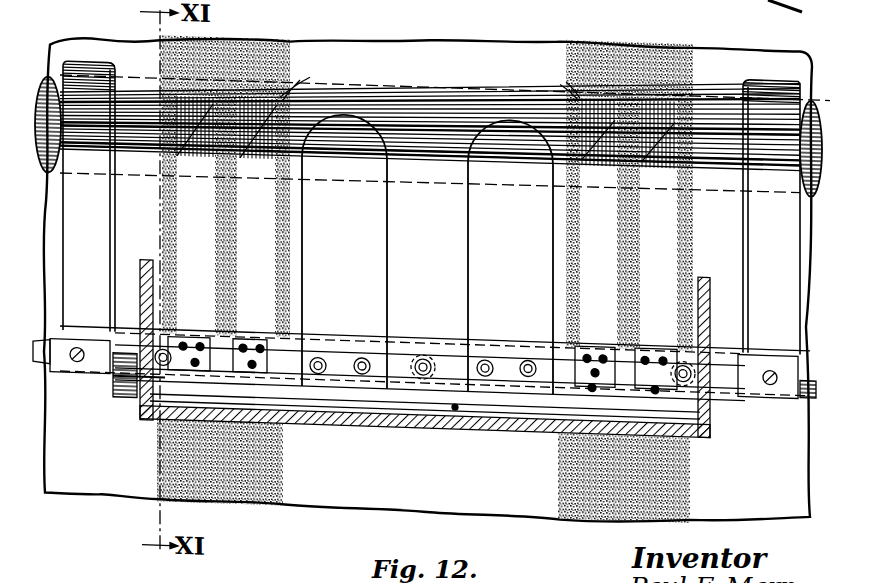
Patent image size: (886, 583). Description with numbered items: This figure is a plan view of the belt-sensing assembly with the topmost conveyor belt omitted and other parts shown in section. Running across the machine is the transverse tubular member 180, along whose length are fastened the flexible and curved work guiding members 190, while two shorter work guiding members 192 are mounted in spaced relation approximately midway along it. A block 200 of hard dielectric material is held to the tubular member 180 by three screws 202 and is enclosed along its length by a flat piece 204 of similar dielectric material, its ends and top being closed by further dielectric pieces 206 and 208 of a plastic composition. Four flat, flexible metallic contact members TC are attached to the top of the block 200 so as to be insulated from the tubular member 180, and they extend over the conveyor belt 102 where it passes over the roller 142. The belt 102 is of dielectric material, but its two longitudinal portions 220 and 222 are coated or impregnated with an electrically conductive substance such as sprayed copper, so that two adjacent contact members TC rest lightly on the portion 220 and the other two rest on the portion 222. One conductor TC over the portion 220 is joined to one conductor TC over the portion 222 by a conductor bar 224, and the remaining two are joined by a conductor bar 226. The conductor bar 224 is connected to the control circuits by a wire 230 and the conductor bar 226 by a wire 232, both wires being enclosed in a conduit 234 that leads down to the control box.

The conveyor belt 102 is at (338, 487).
The roller 142 is at (813, 60).
The transverse tubular member 180 is at (793, 377).
The work guiding members 190 is at (97, 57).
The work guiding members 192 is at (475, 156).
The block 200 is at (363, 398).
The screws 202 is at (167, 326).
The flat piece 204 is at (395, 409).
The piece 206 is at (712, 256).
The piece 208 is at (150, 255).
The longitudinal portion 220 is at (283, 450).
The longitudinal portion 222 is at (557, 484).
The conductor bar 224 is at (396, 349).
The conductor bar 226 is at (453, 394).
The wire 230 is at (140, 400).
The wire 232 is at (152, 418).
The conduit 234 is at (78, 382).
The contact members TC is at (430, 81).